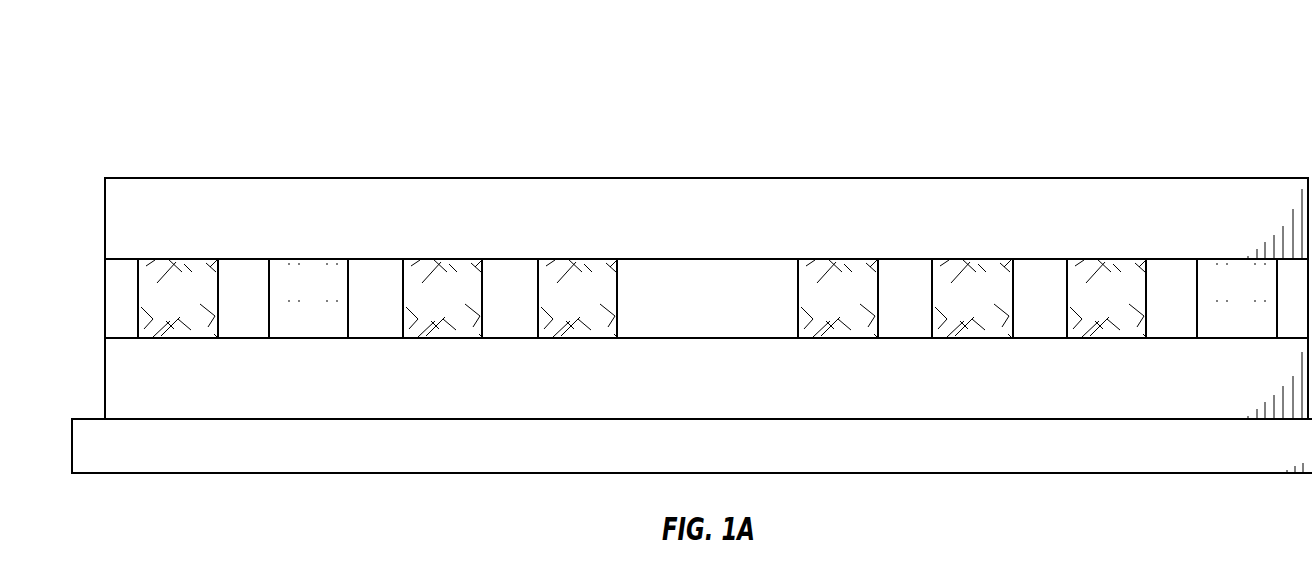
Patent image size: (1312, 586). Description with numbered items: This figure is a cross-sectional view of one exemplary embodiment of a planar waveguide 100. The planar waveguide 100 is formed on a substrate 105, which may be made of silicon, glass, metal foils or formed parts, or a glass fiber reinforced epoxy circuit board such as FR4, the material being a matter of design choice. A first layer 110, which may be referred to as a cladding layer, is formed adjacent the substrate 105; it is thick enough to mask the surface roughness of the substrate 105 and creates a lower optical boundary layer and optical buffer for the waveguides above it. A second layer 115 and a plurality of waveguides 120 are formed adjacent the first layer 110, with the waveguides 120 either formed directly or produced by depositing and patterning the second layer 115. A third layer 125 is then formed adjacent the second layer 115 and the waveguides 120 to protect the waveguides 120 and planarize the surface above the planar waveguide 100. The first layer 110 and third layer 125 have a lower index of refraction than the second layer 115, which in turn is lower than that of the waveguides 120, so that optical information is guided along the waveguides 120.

The planar waveguide 100 is at (1109, 67).
The substrate 105 is at (729, 461).
The first layer 110 is at (729, 394).
The second layer 115 is at (104, 300).
The waveguides 120 is at (177, 340).
The third layer 125 is at (729, 232).